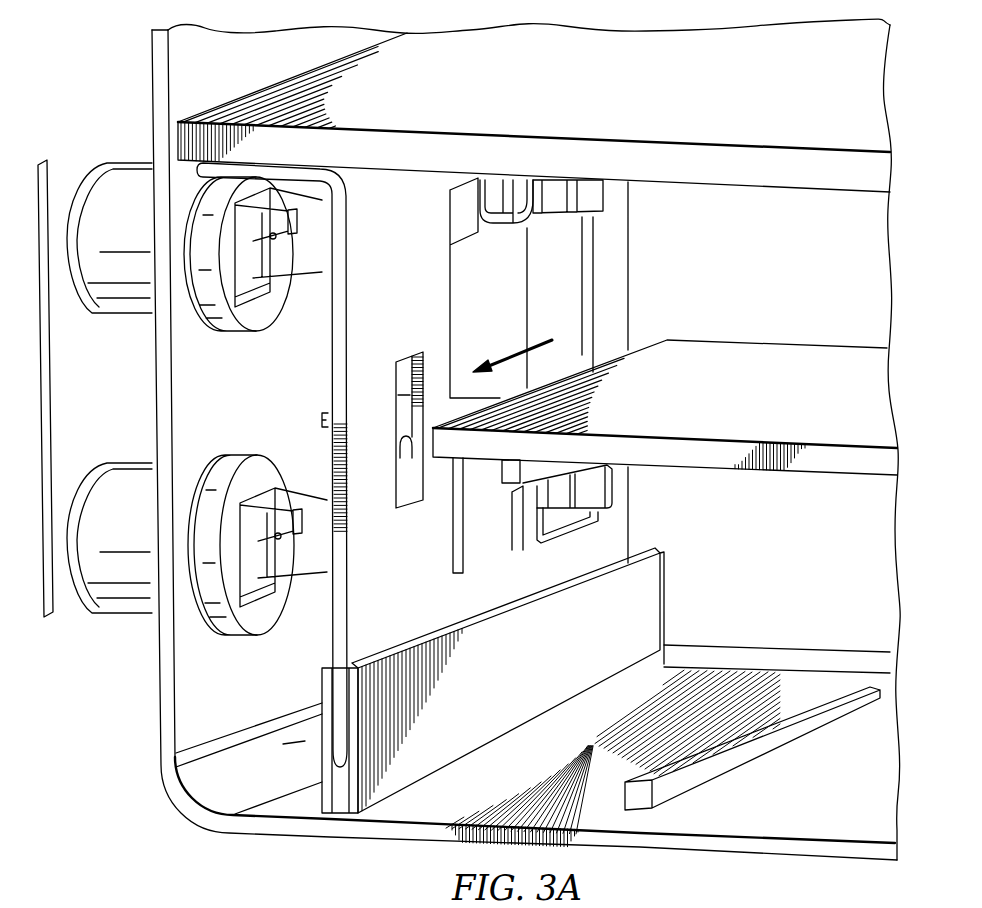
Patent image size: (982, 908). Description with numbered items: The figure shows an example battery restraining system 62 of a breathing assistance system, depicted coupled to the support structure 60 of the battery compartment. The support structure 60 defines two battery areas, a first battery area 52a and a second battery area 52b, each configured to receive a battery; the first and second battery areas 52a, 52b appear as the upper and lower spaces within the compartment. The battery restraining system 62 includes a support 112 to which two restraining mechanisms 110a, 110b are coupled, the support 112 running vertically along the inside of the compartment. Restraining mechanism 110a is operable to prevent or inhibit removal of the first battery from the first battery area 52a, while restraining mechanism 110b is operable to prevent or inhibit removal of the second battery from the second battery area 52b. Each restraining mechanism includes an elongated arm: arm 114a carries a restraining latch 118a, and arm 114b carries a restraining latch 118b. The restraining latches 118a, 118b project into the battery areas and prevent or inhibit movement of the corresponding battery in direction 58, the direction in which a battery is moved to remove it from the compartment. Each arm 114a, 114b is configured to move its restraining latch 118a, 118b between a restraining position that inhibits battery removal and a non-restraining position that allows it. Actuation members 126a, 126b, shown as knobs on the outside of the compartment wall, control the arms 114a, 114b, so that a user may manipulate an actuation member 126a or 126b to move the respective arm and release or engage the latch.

The first battery area 52a is at (805, 261).
The second battery area 52b is at (810, 549).
The second direction 58 is at (512, 353).
The support structure 60 is at (196, 696).
The battery restraining system 62 is at (46, 385).
The restraining mechanism 110a is at (302, 311).
The restraining mechanism 110b is at (305, 611).
The support 112 is at (332, 399).
The arm 114a is at (308, 248).
The arm 114b is at (317, 549).
The restraining latch 118a is at (606, 197).
The restraining latch 118b is at (613, 493).
The actuation member 126a is at (118, 317).
The actuation member 126b is at (122, 618).